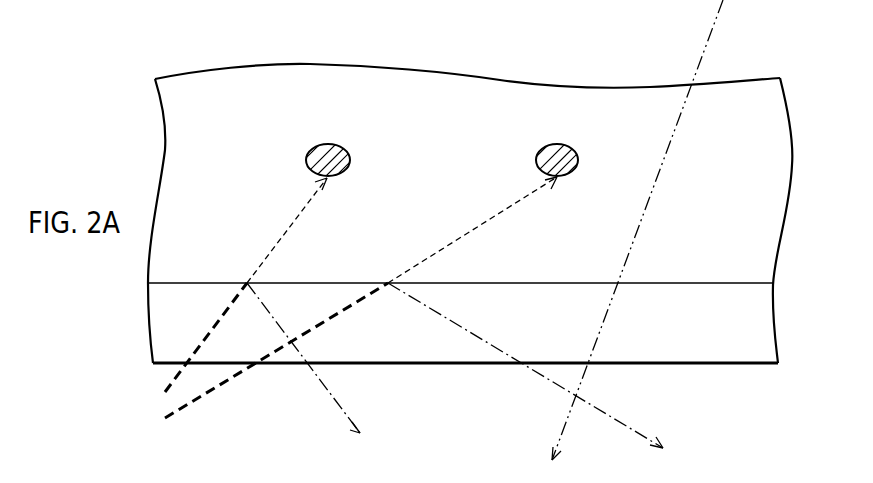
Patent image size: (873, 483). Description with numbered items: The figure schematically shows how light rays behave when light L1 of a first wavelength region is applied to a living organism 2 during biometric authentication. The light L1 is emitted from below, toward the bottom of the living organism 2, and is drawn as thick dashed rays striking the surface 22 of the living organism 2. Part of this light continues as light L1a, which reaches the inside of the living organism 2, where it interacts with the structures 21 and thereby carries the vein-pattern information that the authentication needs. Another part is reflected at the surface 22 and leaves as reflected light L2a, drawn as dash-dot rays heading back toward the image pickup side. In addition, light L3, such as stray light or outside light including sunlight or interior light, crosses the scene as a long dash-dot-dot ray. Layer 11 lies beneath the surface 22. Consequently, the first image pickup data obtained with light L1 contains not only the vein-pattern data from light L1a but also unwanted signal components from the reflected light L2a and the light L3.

The living organism 2 is at (783, 195).
The lower layer 11 is at (765, 337).
The light receiving portion 21 is at (322, 145).
The surface (skin) 22 is at (717, 283).
The light L1 is at (172, 382).
The light reaching the inside of the living organism L1a is at (281, 238).
The reflected light L2a is at (337, 402).
The stray light or outside light L3 is at (675, 118).